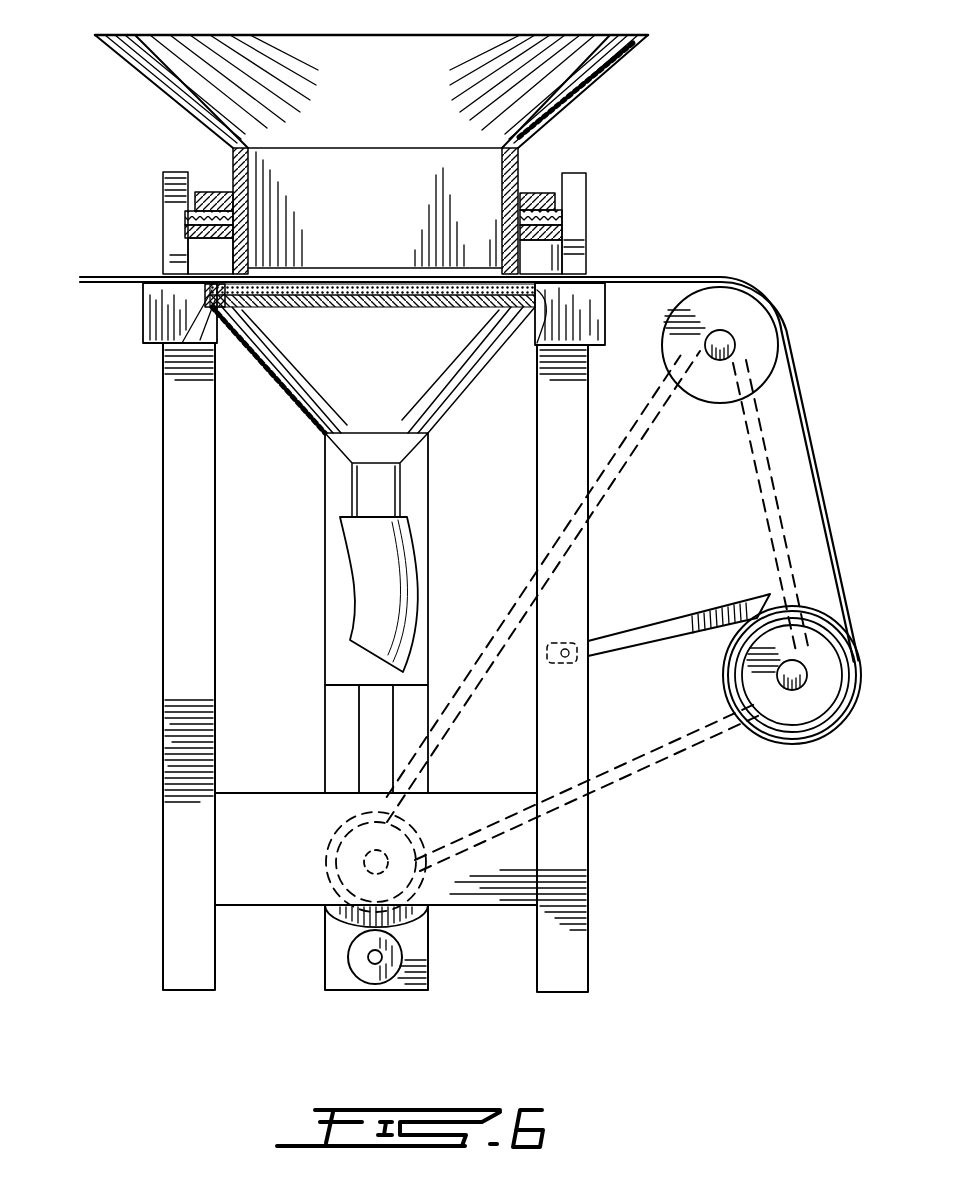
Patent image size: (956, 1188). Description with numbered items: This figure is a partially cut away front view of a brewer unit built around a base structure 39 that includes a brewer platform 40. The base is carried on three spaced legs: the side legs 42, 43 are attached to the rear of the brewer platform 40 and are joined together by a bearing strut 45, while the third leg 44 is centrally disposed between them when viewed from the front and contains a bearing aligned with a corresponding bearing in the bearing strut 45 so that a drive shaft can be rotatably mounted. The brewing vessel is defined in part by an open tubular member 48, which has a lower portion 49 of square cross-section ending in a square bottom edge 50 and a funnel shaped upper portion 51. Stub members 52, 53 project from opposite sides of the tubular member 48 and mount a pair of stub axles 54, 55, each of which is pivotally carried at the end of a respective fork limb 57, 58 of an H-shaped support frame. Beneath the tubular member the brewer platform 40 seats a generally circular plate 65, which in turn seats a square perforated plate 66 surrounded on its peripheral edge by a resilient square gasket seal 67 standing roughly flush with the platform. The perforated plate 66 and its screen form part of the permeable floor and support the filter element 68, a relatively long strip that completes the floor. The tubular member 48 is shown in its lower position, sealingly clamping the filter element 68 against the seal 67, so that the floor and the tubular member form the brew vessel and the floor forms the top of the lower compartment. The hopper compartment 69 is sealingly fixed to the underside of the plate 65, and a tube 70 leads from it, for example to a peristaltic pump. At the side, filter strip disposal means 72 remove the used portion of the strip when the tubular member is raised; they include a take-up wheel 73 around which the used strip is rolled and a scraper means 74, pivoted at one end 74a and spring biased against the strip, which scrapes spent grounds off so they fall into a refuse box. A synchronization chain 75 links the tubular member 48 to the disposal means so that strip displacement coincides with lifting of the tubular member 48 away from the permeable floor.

The base structure 39 is at (146, 572).
The brewer platform 40 is at (140, 326).
The leg member 42 is at (162, 748).
The leg member 43 is at (590, 948).
The leg member 44 is at (380, 990).
The bearing strut 45 is at (272, 905).
The tubular member 48 is at (122, 86).
The lower portion 49 is at (545, 137).
The bottom edge 50 is at (540, 270).
The upper portion 51 is at (630, 55).
The stub member 52 is at (532, 195).
The stub member 53 is at (215, 190).
The stub axle 54 is at (565, 232).
The stub axle 55 is at (188, 228).
The fork limb 57 is at (185, 197).
The fork limb 58 is at (565, 222).
The plate 65 is at (200, 356).
The perforated plate 66 is at (392, 306).
The gasket seal 67 is at (213, 290).
The filter element 68 is at (90, 277).
The hopper compartment 69 is at (286, 397).
The tube 70 is at (362, 540).
The filter strip disposal means 72 is at (778, 300).
The shaft means 73 is at (800, 715).
The scraper means 74 is at (733, 604).
The pivot end 74a is at (573, 658).
The synchronization chain 75 is at (672, 758).